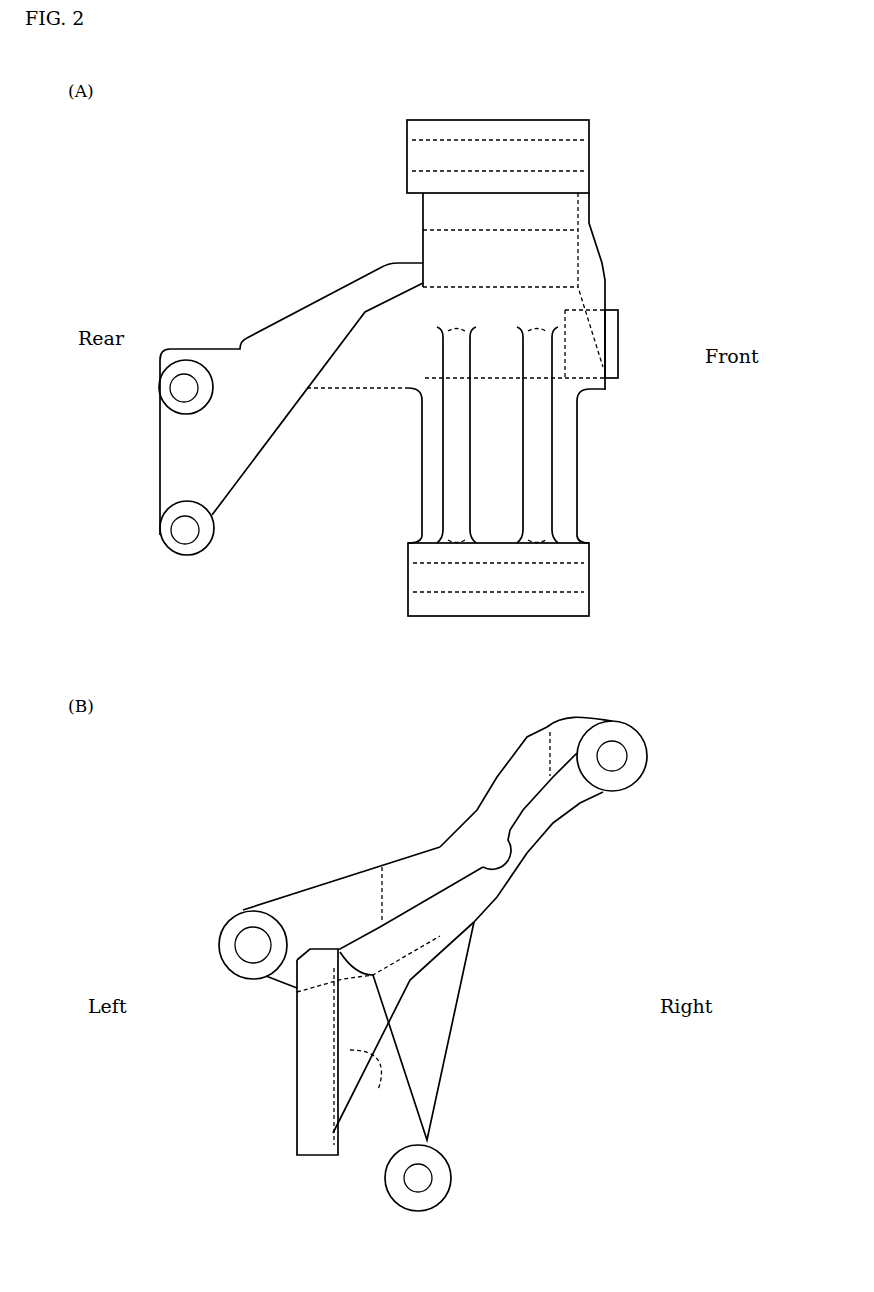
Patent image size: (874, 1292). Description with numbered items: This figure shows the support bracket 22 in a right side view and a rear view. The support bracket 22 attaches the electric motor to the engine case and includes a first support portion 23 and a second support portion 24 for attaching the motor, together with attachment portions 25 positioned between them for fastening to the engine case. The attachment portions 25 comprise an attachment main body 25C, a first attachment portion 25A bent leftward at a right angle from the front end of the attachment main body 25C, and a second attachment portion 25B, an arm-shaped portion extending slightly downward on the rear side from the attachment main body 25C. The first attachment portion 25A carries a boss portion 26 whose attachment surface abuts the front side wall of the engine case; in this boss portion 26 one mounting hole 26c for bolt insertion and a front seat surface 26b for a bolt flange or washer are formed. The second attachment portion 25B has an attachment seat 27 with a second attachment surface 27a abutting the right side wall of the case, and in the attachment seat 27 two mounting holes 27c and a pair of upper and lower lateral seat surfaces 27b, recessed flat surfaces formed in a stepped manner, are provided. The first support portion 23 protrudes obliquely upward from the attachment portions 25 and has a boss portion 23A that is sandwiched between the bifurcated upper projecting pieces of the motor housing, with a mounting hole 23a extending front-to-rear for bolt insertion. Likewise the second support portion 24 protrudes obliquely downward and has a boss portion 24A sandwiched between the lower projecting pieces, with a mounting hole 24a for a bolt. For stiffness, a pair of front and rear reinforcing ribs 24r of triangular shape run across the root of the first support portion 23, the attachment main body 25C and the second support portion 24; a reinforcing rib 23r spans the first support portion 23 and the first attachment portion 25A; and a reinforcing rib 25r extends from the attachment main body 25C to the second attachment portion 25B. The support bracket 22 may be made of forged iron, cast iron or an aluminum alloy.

The support bracket 22 is at (527, 112).
The first support portion 23 is at (430, 208).
The boss portion 23A is at (582, 130).
The mounting hole 23a is at (545, 170).
The reinforcing rib 23r is at (592, 221).
The second support portion 24 is at (572, 500).
The boss portion 24A is at (553, 614).
The mounting hole 24a is at (410, 575).
The reinforcing ribs 24r is at (532, 425).
The attachment portions 25 is at (557, 307).
The first attachment portion 25A is at (290, 920).
The second attachment portion 25B is at (250, 343).
The attachment main body 25C is at (403, 355).
The reinforcing rib 25r is at (285, 405).
The boss portion 26 is at (610, 345).
The front seat surface 26b is at (620, 372).
The mounting hole 26c is at (243, 948).
The attachment seat 27 is at (161, 466).
The second attachment surface 27a is at (297, 1080).
The lateral seat surfaces 27b is at (160, 406).
The mounting holes 27c is at (182, 374).